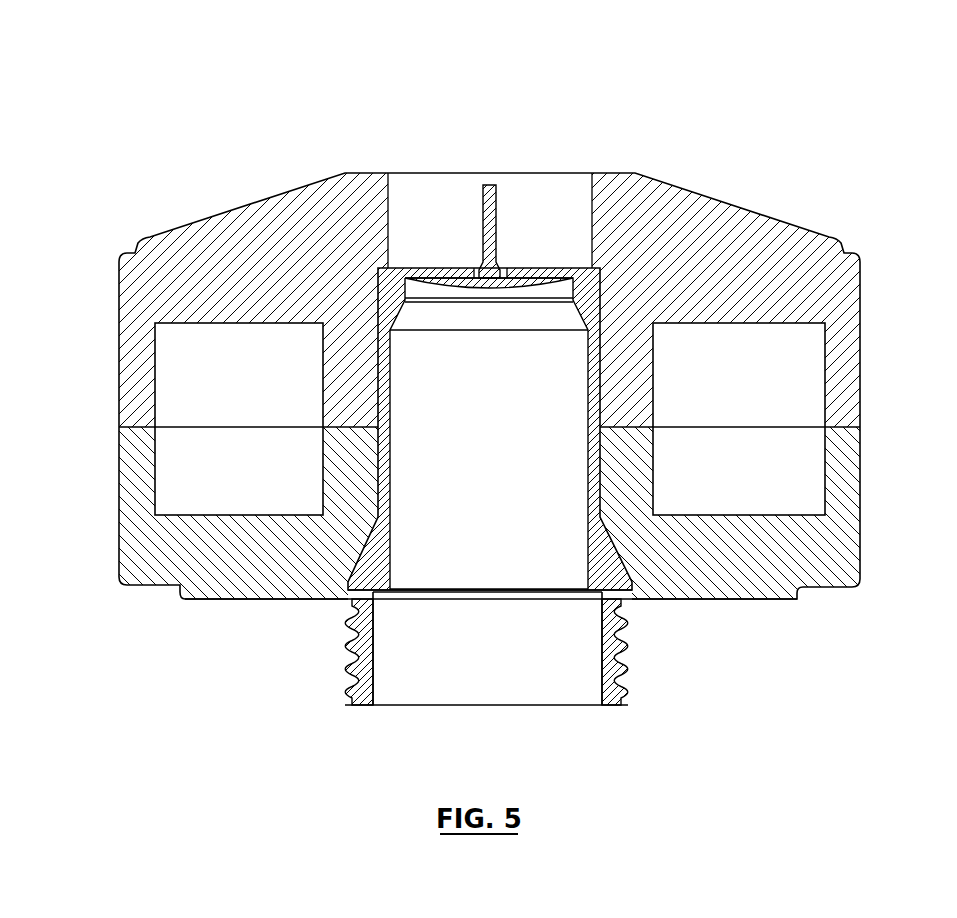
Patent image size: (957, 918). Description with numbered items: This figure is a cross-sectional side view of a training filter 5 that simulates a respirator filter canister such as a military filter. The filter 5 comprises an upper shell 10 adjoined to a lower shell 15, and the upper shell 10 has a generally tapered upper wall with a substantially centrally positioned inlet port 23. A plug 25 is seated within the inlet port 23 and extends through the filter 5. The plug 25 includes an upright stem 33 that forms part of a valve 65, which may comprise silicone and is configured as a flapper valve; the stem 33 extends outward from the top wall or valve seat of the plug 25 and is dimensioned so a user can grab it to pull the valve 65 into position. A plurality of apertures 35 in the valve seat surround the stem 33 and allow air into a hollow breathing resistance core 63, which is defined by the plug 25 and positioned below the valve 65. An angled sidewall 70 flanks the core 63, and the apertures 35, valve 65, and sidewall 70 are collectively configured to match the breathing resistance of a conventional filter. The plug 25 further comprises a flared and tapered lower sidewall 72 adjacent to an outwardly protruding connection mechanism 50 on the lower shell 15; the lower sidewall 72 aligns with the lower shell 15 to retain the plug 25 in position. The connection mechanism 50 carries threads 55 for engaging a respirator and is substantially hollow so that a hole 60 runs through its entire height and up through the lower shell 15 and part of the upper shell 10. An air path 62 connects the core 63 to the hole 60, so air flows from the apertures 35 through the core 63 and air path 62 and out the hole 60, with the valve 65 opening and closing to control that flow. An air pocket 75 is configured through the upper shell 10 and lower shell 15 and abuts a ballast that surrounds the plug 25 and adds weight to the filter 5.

The training filter 5 is at (856, 202).
The upper shell 10 is at (848, 308).
The lower shell 15 is at (837, 552).
The inlet port 23 is at (410, 203).
The plug 25 is at (553, 264).
The stem 33 is at (490, 203).
The apertures 35 is at (513, 273).
The connection mechanism 50 is at (607, 704).
The threads 55 is at (625, 690).
The hole 60 is at (528, 682).
The air path 62 is at (437, 557).
The hollow breathing resistance core 63 is at (460, 375).
The valve 65 is at (492, 278).
The angled sidewall 70 is at (582, 313).
The lower sidewall 72 is at (358, 575).
The air pocket 75 is at (208, 478).